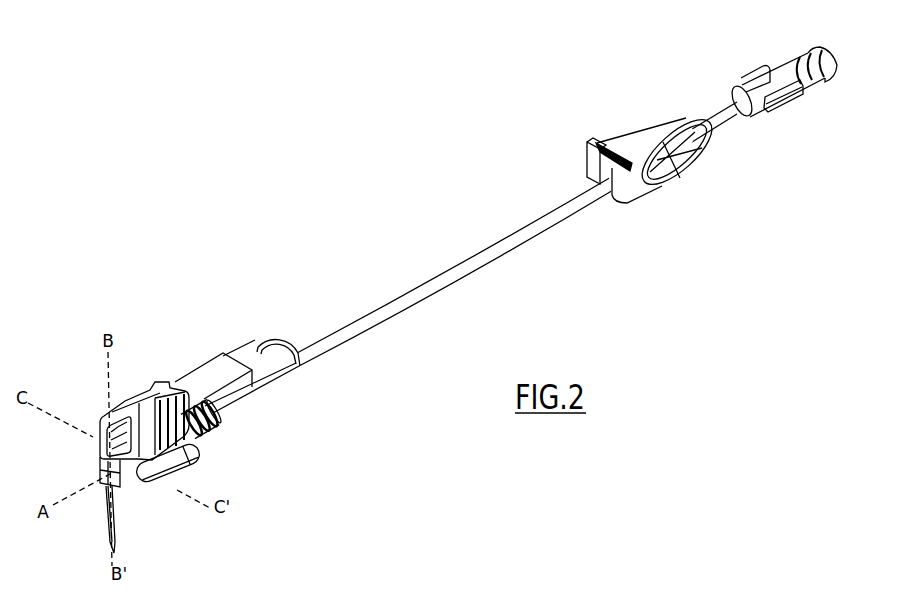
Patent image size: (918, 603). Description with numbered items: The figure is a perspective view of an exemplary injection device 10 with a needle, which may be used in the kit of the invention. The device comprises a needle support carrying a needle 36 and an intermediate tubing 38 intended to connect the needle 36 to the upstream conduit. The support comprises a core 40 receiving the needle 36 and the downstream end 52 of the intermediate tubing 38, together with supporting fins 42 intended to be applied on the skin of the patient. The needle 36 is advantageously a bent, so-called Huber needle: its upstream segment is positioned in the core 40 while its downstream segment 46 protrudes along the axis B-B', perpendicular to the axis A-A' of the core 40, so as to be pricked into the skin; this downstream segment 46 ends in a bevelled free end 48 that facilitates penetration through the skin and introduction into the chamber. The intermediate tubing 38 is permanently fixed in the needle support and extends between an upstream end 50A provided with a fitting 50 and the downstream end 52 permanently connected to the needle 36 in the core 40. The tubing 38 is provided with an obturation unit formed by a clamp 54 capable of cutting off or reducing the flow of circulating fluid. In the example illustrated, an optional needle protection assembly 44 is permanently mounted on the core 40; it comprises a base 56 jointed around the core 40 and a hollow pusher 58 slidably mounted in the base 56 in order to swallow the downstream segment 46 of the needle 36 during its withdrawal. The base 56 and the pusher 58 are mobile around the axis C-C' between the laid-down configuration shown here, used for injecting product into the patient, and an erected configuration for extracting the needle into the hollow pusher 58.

The biopsy instrument 10 is at (428, 182).
The needle 36 is at (119, 510).
The intermediate tubing 38 is at (429, 277).
The core 40 is at (103, 447).
The fins 42 is at (177, 481).
The needle protection assembly 44 is at (166, 345).
The downstream segment 46 is at (105, 509).
The bevelled free end 48 is at (113, 541).
The fitting 50 is at (839, 83).
The upstream end 50A is at (781, 73).
The downstream end 52 is at (218, 424).
The clamp 54 is at (645, 132).
The base 56 is at (126, 392).
The hollow pusher 58 is at (210, 373).